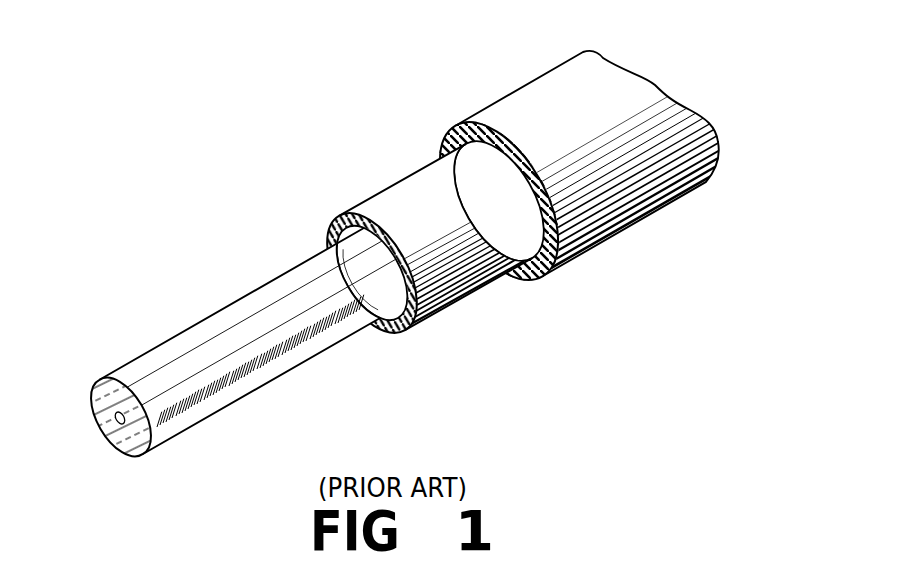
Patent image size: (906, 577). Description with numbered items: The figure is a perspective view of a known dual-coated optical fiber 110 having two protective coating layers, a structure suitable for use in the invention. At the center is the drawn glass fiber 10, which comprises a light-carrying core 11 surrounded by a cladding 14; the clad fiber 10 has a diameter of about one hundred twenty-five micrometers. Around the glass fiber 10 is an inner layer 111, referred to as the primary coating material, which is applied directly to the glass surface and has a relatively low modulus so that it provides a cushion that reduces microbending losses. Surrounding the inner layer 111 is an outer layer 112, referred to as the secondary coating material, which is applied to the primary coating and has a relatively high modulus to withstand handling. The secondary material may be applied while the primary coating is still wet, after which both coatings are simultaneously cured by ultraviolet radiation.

The glass fiber 10 is at (221, 294).
The light-carrying core 11 is at (114, 419).
The cladding 14 is at (102, 390).
The dual-coated optical fiber 110 is at (545, 60).
The inner layer 111 is at (413, 183).
The outer layer 112 is at (498, 112).